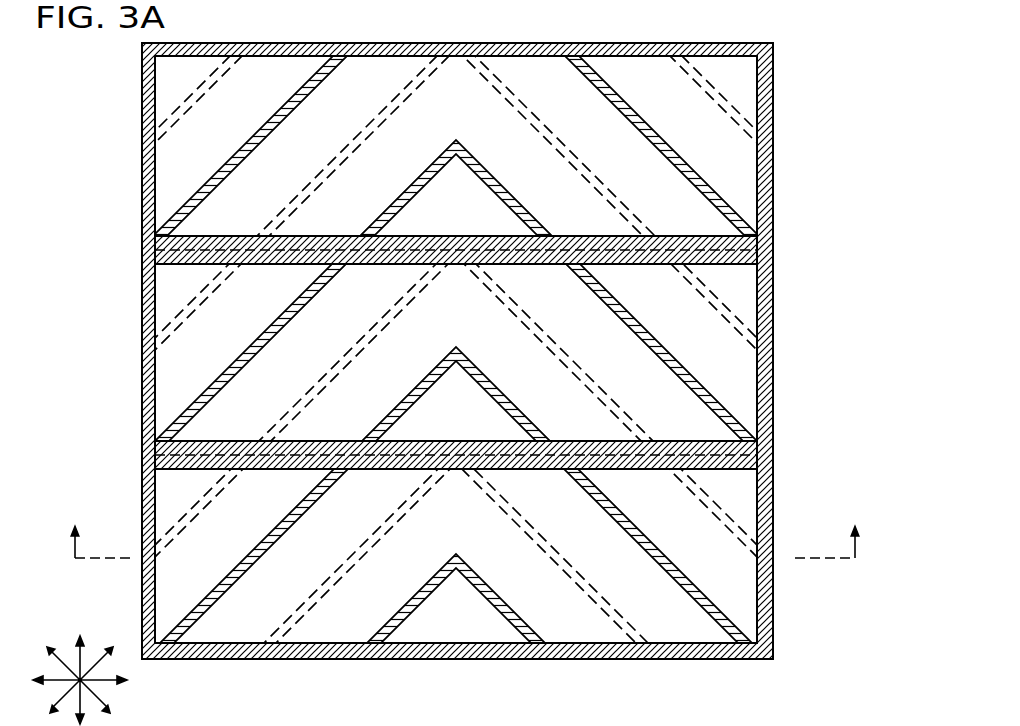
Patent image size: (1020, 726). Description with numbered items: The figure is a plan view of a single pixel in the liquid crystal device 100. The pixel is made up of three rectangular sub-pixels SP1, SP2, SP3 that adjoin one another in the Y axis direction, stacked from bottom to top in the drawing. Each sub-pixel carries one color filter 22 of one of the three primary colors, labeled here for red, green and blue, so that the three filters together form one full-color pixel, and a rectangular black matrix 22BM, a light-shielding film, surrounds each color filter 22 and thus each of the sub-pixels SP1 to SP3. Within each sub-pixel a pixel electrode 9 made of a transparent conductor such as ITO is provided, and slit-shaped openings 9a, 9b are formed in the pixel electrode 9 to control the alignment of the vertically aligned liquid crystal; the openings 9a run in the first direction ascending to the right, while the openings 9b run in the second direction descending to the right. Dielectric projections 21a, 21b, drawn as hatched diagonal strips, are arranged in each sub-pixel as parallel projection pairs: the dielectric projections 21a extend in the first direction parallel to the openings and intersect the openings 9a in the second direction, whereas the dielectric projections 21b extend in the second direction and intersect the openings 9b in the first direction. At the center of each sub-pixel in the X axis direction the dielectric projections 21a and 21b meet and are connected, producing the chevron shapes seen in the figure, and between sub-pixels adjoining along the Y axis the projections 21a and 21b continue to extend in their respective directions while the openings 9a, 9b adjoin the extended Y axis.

The liquid crystal device 100 is at (830, 126).
The pixel electrode 9 is at (775, 156).
The opening 9a is at (192, 298).
The opening 9b is at (775, 85).
The dielectric projection 21a is at (150, 203).
The dielectric projection 21b is at (775, 190).
The color filter 22 is at (484, 127).
The black matrix 22BM is at (775, 650).
The sub-pixel SP1 is at (142, 504).
The sub-pixel SP2 is at (142, 355).
The sub-pixel SP3 is at (142, 143).